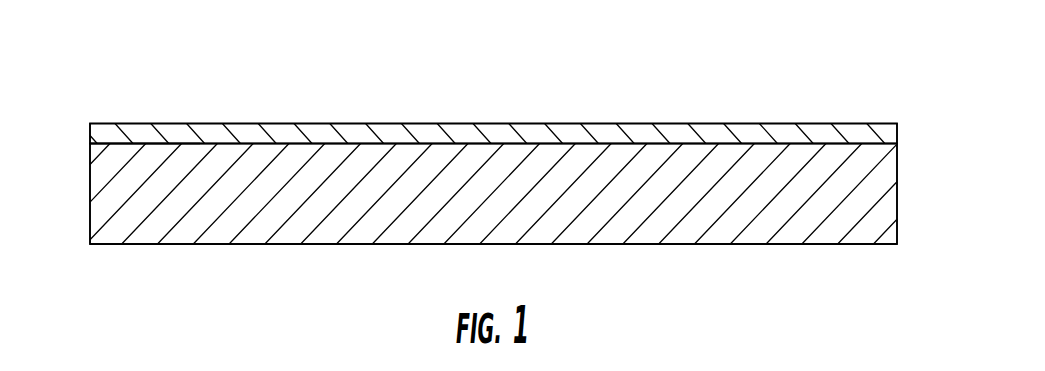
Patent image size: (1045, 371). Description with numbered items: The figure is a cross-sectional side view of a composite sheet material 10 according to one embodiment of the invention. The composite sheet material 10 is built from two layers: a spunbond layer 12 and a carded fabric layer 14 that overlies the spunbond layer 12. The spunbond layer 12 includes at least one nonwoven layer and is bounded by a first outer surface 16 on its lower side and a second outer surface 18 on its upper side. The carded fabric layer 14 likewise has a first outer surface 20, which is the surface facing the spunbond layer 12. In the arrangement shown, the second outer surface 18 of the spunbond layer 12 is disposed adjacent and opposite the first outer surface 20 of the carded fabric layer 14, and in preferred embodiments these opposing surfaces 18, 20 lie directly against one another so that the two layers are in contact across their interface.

The composite sheet material 10 is at (859, 78).
The spunbond layer 12 is at (897, 205).
The carded fabric layer 14 is at (897, 131).
The first outer surface 16 is at (162, 245).
The second outer surface 18 is at (110, 143).
The first outer surface 20 is at (118, 145).